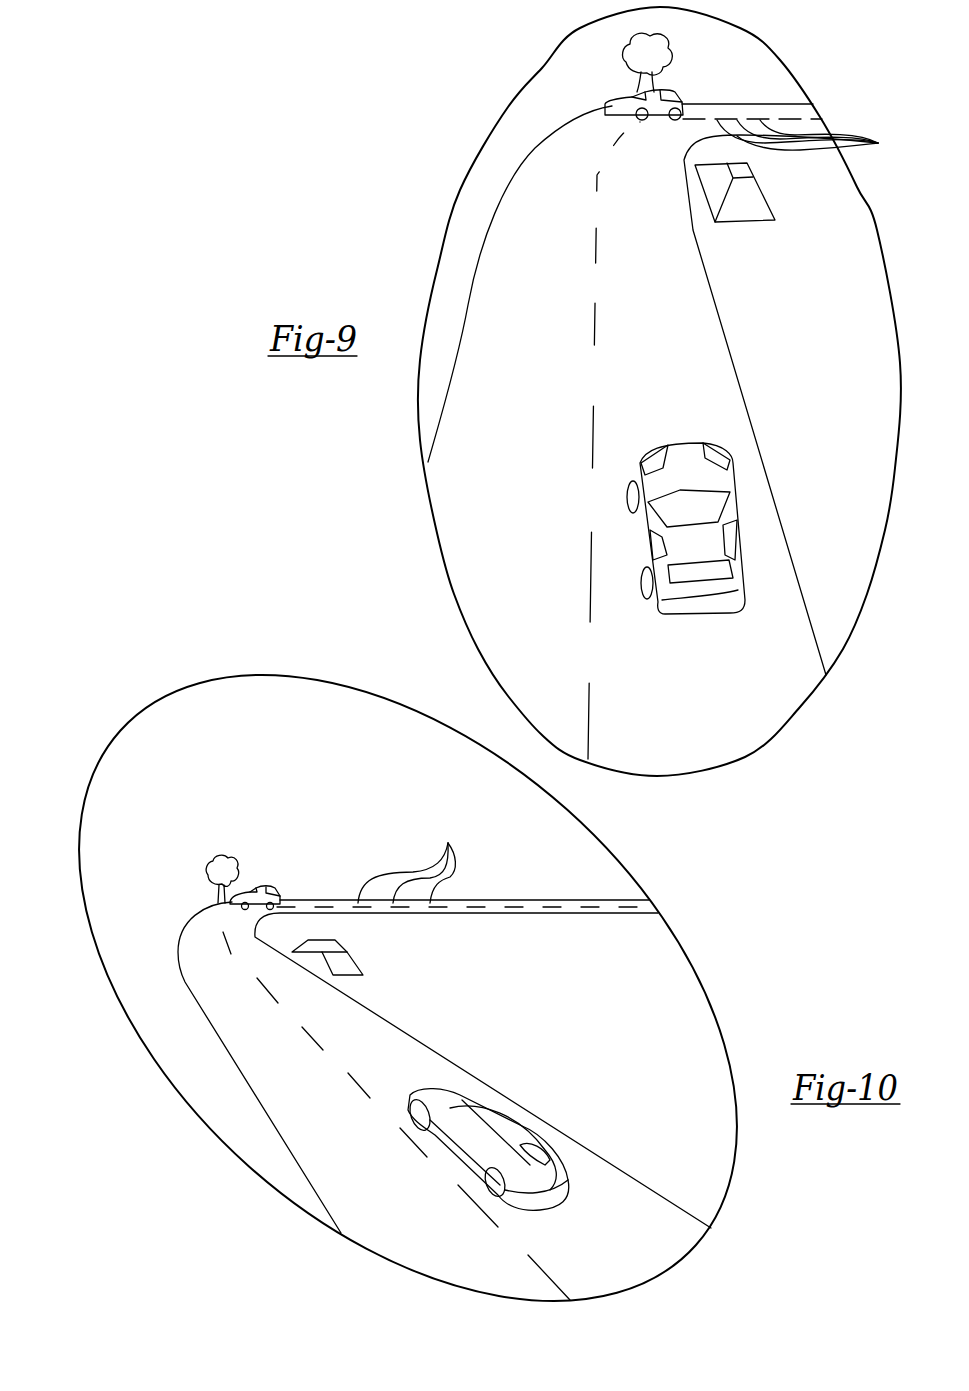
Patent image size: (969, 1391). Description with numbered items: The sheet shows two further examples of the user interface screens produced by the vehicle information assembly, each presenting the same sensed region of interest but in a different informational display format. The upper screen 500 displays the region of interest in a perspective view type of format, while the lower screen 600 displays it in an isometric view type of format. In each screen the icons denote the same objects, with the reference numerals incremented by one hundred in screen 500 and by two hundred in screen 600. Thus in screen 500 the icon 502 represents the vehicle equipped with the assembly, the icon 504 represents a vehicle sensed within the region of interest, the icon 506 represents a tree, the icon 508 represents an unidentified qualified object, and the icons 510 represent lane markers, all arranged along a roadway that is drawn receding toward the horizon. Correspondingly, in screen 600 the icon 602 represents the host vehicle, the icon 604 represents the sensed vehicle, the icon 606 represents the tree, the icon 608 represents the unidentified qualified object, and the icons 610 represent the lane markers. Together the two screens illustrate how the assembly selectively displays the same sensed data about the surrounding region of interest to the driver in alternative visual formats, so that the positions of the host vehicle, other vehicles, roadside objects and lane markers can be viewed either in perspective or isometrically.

In FIG. 9, the screen 500 is at (441, 161).
In FIG. 9, the icon representing the vehicle equipped with the assembly 502 is at (707, 550).
In FIG. 9, the icon representing a sensed vehicle 504 is at (667, 95).
In FIG. 9, the icon representing a tree 506 is at (647, 55).
In FIG. 9, the icon representing an unidentified qualified object 508 is at (760, 210).
In FIG. 9, the icons representing lane markers 510 is at (820, 140).
In FIG. 10, the screen 600 is at (136, 706).
In FIG. 10, the icon representing the vehicle equipped with the assembly 602 is at (503, 1135).
In FIG. 10, the icon representing a sensed vehicle 604 is at (263, 888).
In FIG. 10, the icon representing a tree 606 is at (225, 858).
In FIG. 10, the icon representing an unidentified qualified object 608 is at (357, 960).
In FIG. 10, the icons representing lane markers 610 is at (413, 858).